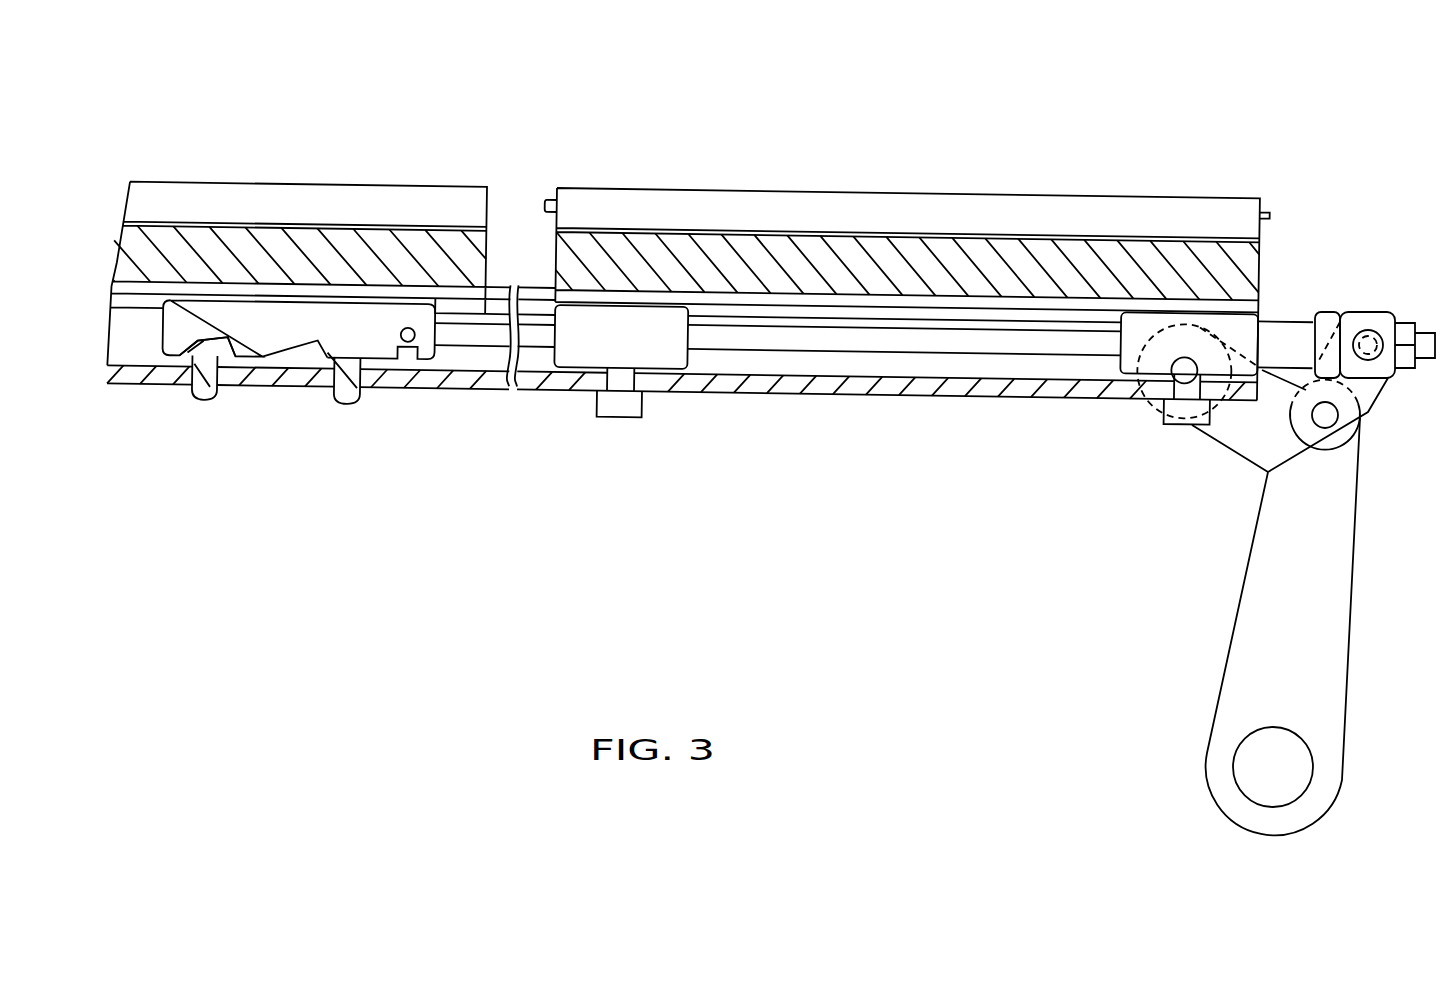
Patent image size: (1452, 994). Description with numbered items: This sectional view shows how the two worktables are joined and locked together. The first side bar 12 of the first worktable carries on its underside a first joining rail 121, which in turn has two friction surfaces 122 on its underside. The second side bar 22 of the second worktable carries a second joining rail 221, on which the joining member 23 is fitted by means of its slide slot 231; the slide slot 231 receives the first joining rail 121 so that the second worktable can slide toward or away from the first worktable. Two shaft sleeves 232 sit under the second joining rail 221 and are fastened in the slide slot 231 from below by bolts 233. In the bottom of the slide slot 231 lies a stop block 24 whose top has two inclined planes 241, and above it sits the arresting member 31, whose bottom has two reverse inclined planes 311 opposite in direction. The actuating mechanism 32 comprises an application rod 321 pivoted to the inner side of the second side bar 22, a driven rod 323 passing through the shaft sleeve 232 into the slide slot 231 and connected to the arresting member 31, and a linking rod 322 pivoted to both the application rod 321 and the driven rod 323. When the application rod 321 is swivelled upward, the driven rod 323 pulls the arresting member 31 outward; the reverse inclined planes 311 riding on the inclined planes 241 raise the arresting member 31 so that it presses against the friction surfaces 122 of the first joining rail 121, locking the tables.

The first side bar 12 is at (220, 225).
The first joining rail 121 is at (477, 318).
The friction surfaces 122 is at (447, 310).
The second side bar 22 is at (1173, 237).
The second joining rail 221 is at (758, 315).
The joining member 23 is at (855, 388).
The slide slot 231 is at (946, 365).
The shaft sleeve 232 is at (667, 360).
The bolt 233 is at (622, 407).
The stop block 24 is at (198, 382).
The inclined planes 241 is at (183, 358).
The arresting member 31 is at (366, 330).
The reverse inclined planes 311 is at (290, 368).
The actuating mechanism 32 is at (1100, 445).
The application rod 321 is at (1270, 578).
The linking rod 322 is at (1273, 475).
The driven rod 323 is at (1105, 342).